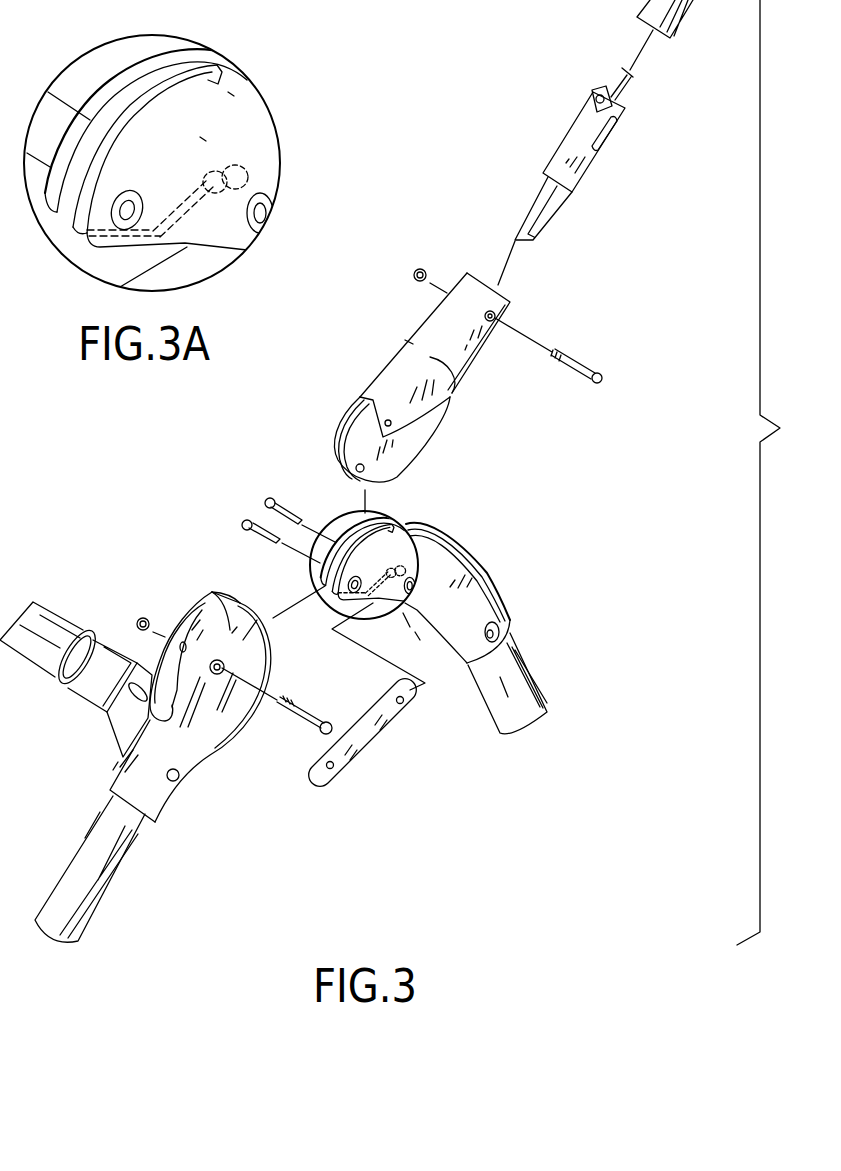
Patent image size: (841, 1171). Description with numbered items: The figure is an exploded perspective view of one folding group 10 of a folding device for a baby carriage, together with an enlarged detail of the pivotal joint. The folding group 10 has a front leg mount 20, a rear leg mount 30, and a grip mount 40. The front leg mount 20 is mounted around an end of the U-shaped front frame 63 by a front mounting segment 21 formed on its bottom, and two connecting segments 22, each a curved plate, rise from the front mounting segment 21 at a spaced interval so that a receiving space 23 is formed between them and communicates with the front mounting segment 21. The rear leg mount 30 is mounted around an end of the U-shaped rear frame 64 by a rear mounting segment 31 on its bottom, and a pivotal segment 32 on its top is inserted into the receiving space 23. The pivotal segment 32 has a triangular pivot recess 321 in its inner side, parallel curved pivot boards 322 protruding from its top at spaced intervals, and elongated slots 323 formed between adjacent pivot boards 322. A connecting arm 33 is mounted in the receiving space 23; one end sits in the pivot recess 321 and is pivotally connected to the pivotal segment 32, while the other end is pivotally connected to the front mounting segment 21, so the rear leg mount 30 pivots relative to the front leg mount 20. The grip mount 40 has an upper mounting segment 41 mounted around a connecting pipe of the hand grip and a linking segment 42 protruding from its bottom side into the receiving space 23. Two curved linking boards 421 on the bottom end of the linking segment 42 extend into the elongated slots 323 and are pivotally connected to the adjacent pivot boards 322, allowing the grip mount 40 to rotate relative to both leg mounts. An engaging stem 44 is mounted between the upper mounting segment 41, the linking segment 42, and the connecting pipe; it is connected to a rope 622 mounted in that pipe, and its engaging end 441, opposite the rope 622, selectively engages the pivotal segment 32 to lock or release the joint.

In FIG. 3, the folding group 10 is at (606, 484).
In FIG. 3, the front leg mount 20 is at (149, 692).
In FIG. 3, the front mounting segment 21 is at (146, 808).
In FIG. 3, the connecting segments 22 is at (185, 614).
In FIG. 3, the receiving space 23 is at (220, 607).
In FIG. 3, the rear leg mount 30 is at (432, 573).
In FIG. 3, the rear mounting segment 31 is at (497, 614).
In FIG. 3, the pivotal segment 32 is at (447, 557).
In FIG. 3, the connecting arm 33 is at (367, 737).
In FIG. 3, the grip mount 40 is at (445, 375).
In FIG. 3, the upper mounting segment 41 is at (468, 366).
In FIG. 3, the linking segment 42 is at (365, 371).
In FIG. 3, the engaging stem 44 is at (544, 185).
In FIG. 3, the front frame 63 is at (102, 883).
In FIG. 3, the rear frame 64 is at (552, 678).
In FIG. 3, the pivot recess 321 is at (419, 638).
In FIG. 3A, the pivot boards 322 is at (118, 133).
In FIG. 3, the pivot boards 322 is at (330, 585).
In FIG. 3A, the elongated slots 323 is at (153, 85).
In FIG. 3, the elongated slots 323 is at (373, 525).
In FIG. 3, the linking boards 421 is at (348, 432).
In FIG. 3, the engaging end 441 is at (528, 213).
In FIG. 3, the rope 622 is at (618, 80).